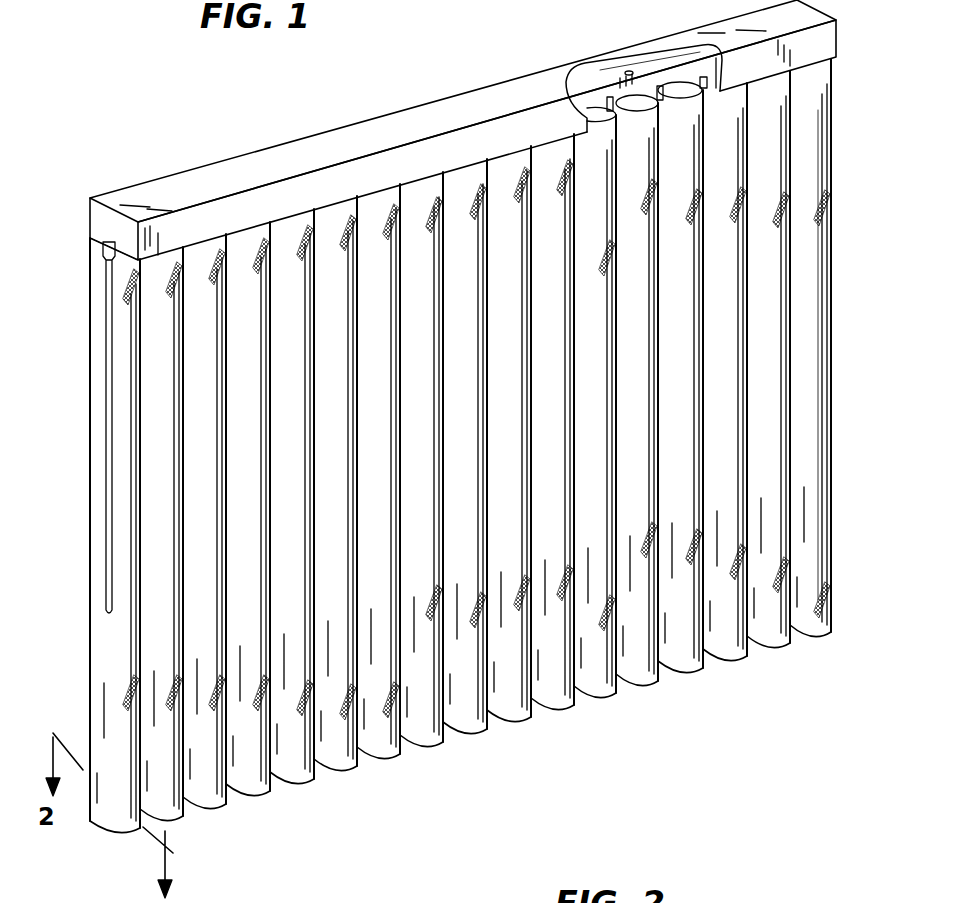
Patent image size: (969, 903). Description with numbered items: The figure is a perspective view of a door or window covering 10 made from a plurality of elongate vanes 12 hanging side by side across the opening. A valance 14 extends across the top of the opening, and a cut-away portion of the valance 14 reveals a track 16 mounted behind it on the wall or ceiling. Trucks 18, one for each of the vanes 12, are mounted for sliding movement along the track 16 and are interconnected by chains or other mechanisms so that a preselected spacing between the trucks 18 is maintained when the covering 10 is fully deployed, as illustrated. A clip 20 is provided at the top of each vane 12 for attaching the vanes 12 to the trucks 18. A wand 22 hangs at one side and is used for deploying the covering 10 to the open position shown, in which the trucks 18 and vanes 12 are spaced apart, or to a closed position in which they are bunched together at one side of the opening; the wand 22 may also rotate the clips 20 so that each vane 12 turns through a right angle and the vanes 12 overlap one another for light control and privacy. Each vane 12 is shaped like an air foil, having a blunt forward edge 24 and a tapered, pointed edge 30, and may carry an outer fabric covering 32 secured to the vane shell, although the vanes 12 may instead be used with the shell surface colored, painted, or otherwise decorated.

The door or window covering 10 is at (175, 130).
The elongate vanes 12 is at (828, 378).
The valance 14 is at (341, 140).
The track 16 is at (627, 70).
The trucks 18 is at (622, 95).
The clip 20 is at (600, 102).
The wand 22 is at (105, 563).
The blunt forward edge 24 is at (820, 522).
The tapered, pointed edge 30 is at (90, 647).
The outer fabric covering 32 is at (828, 600).